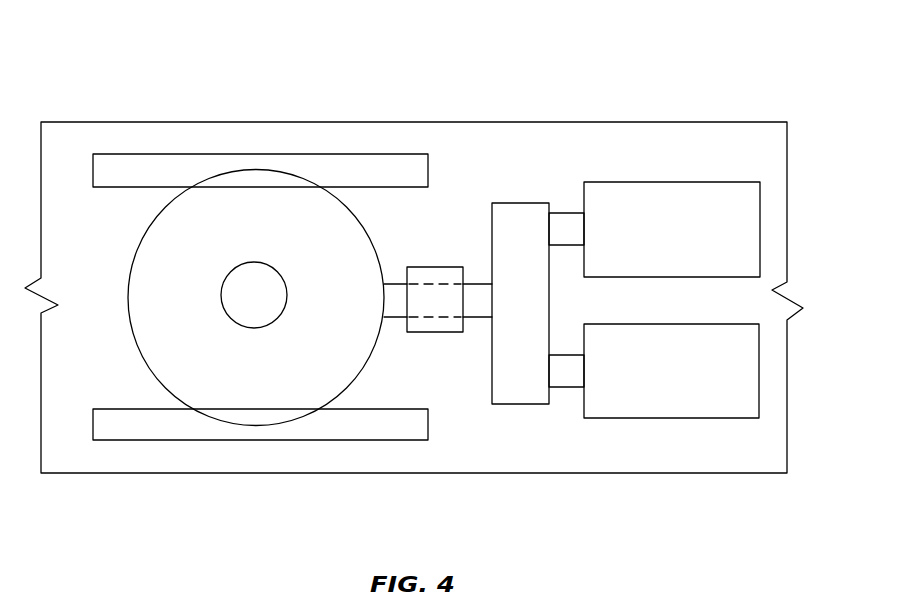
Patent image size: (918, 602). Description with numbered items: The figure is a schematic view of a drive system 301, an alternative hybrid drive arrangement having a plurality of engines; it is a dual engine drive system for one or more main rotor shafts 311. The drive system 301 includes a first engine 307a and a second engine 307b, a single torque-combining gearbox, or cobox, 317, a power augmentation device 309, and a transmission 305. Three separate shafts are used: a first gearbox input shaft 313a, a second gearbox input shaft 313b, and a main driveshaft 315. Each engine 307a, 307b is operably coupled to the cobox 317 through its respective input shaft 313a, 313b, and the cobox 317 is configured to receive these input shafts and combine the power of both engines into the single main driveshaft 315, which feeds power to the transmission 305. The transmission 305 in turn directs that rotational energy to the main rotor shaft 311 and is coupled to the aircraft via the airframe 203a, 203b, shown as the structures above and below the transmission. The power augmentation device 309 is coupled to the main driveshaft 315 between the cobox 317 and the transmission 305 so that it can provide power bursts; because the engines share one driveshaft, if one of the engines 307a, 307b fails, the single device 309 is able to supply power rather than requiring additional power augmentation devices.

The drive system 301 is at (153, 92).
The airframe 203a is at (247, 441).
The airframe 203b is at (272, 154).
The transmission 305 is at (138, 248).
The main rotor shaft 311 is at (221, 307).
The power augmentation device 309 is at (450, 333).
The main driveshaft 315 is at (470, 283).
The torque-combining gearbox 317 is at (520, 405).
The first gearbox input shaft 313a is at (565, 388).
The second gearbox input shaft 313b is at (560, 213).
The first engine 307a is at (697, 419).
The second engine 307b is at (697, 182).